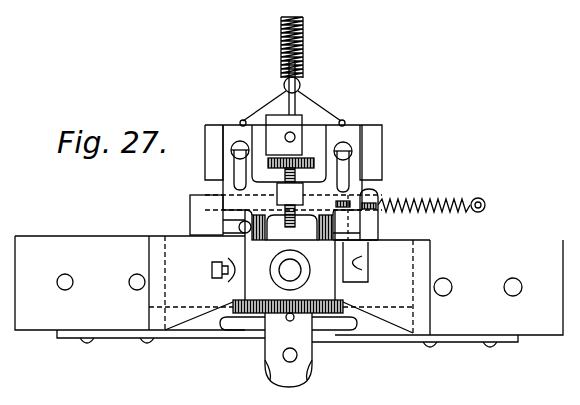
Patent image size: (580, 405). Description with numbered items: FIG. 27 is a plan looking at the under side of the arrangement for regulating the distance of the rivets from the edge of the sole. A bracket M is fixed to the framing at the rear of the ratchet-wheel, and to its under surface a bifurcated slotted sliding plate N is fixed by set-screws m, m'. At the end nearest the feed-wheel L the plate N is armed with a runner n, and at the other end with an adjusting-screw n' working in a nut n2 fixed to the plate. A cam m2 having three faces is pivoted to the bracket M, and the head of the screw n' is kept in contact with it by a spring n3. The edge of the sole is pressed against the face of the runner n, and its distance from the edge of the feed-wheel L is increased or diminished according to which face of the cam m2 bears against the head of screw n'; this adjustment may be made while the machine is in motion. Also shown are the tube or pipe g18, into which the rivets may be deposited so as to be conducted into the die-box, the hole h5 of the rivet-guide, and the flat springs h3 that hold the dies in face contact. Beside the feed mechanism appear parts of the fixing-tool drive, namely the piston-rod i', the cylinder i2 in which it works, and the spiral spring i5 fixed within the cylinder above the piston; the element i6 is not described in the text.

The spring n3 is at (304, 50).
The cam m2 is at (284, 135).
The bracket M is at (382, 128).
The set-screw m is at (219, 152).
The set-screw m' is at (370, 167).
The nut n2 is at (290, 194).
The spiral spring i5 is at (205, 226).
The cylinder i2 is at (363, 214).
The spring i6 is at (431, 195).
The bifurcated slotted sliding plate N is at (290, 229).
The adjusting-screw n' is at (275, 230).
The runner n is at (295, 270).
The piston-rod i' is at (289, 291).
The feed-wheel L is at (343, 301).
The tube or pipe g18 is at (338, 345).
The hole h5 is at (287, 320).
The flat springs h3 is at (322, 376).